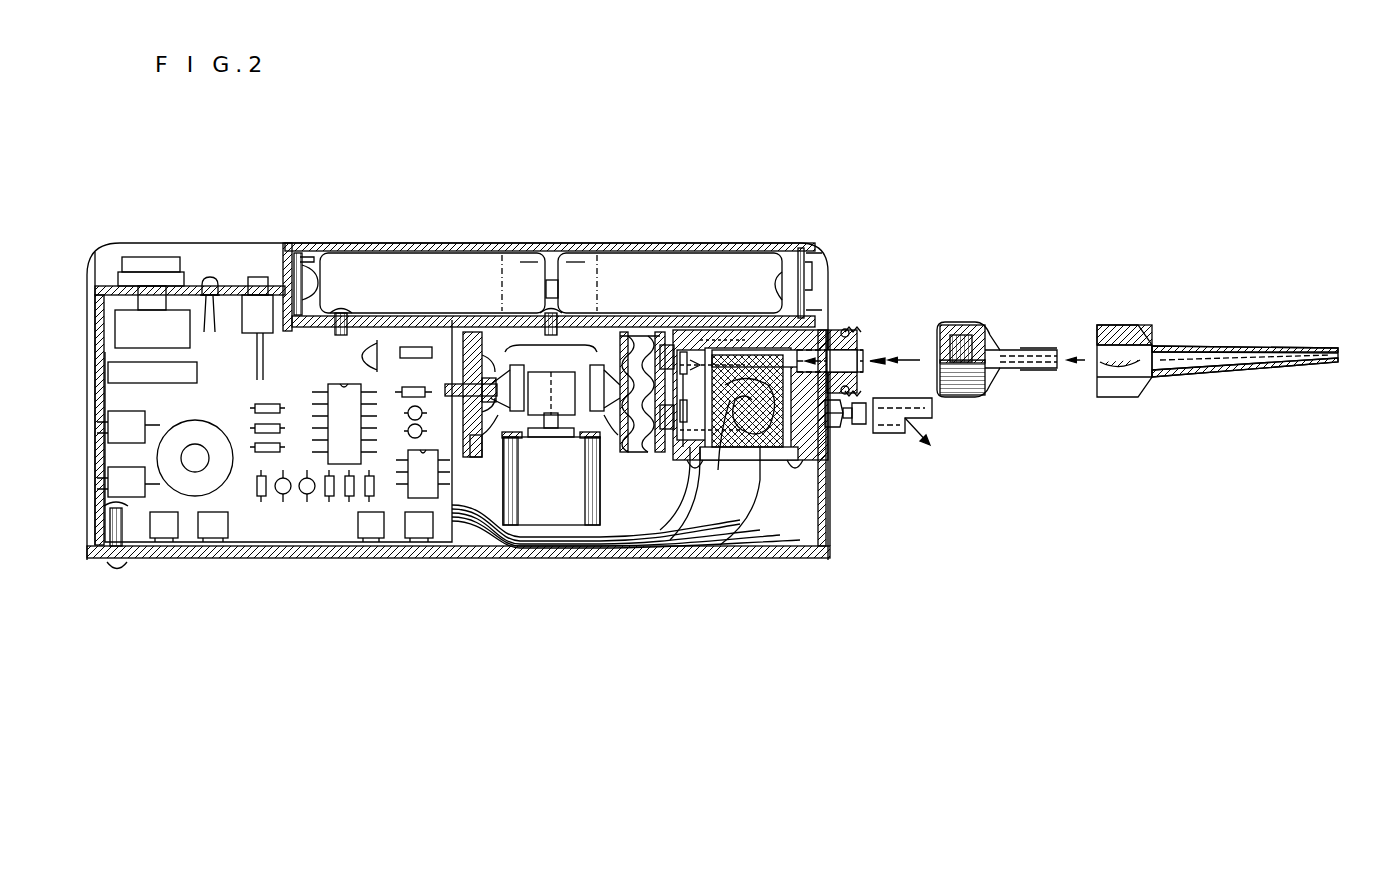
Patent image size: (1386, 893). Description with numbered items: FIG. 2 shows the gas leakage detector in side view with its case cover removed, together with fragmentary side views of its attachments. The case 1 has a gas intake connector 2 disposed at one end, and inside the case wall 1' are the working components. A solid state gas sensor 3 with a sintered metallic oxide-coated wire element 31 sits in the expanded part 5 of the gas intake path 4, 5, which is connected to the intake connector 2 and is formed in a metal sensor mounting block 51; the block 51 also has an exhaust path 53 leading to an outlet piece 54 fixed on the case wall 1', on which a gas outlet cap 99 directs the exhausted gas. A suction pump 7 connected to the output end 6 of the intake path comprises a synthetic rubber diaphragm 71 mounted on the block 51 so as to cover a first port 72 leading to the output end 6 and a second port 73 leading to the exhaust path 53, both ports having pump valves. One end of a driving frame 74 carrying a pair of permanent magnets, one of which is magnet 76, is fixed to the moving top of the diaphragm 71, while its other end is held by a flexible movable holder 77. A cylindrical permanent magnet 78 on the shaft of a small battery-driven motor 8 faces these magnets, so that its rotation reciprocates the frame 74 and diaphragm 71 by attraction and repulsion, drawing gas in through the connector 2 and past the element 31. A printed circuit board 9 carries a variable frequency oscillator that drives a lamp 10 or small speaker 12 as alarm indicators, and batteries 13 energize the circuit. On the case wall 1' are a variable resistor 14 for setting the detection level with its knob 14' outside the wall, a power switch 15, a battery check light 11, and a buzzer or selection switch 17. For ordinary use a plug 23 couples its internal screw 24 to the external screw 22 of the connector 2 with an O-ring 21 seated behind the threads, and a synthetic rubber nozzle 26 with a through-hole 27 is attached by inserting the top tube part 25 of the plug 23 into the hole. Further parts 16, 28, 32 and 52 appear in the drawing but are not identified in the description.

The case 1 is at (450, 408).
The case wall 1' is at (167, 394).
The gas intake connector 2 is at (836, 330).
The solid state gas sensor 3 is at (758, 458).
The gas intake path 4 is at (790, 340).
The expanded part of the gas intake path 5 is at (742, 346).
The output end of the gas intake path 6 is at (688, 340).
The suction pump 7 is at (640, 340).
The motor 8 is at (538, 500).
The printed circuit board 9 is at (271, 525).
The lamp 10 is at (207, 284).
The battery check light 11 is at (218, 290).
The small speaker 12 is at (193, 492).
The batteries 13 is at (445, 280).
The variable resistor 14 is at (113, 317).
The knob 14' is at (151, 238).
The power switch 15 is at (262, 282).
The connector 16 is at (115, 430).
The buzzer switch 17 is at (115, 484).
The O-ring 21 is at (847, 330).
The external screw 22 is at (862, 336).
The plug 23 is at (985, 325).
The internal screw 24 is at (950, 342).
The top tube part 25 is at (1030, 368).
The nozzle 26 is at (1138, 326).
The through-hole 27 is at (1097, 375).
The nozzle tip 28 is at (1338, 348).
The element 31 is at (830, 452).
The end wall outer surface 32 is at (808, 458).
The sensor mounting block 51 is at (690, 470).
The outlet valve 52 is at (720, 450).
The exhaust path 53 is at (702, 455).
The outlet piece 54 is at (860, 423).
The diaphragm 71 is at (622, 400).
The first port 72 is at (662, 355).
The second port 73 is at (648, 400).
The driving frame 74 is at (575, 367).
The permanent magnet 76 is at (549, 440).
The movable holder 77 is at (466, 470).
The cylindrical permanent magnet 78 is at (540, 385).
The gas outlet cap 99 is at (928, 410).